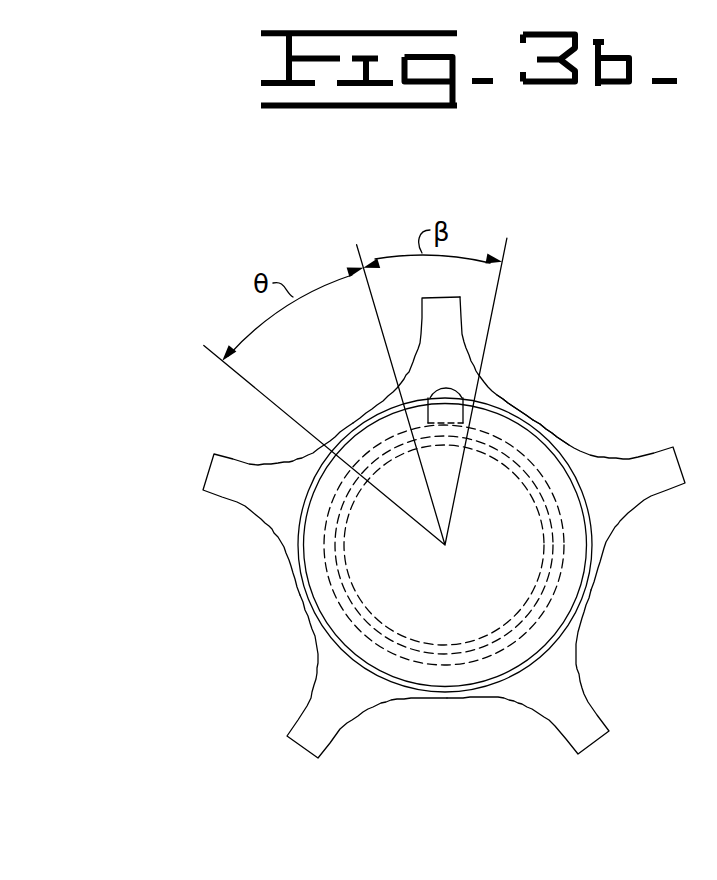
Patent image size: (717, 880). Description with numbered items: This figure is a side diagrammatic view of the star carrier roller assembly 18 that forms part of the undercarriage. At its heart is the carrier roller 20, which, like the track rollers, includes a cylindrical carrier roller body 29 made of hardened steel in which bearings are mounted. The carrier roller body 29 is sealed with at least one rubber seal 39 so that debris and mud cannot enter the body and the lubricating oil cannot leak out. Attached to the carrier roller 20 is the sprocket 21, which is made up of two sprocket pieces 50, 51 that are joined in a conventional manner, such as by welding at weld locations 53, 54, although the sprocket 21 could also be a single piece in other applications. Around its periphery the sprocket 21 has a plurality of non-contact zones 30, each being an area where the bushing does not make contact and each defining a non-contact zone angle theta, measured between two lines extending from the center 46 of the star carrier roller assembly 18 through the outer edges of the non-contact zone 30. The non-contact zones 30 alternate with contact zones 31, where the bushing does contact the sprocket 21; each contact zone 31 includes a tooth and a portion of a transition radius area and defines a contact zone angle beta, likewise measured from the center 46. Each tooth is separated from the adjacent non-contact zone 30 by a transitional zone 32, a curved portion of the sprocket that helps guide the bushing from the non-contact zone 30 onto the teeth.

The star carrier roller assembly 18 is at (448, 489).
The carrier roller 20 is at (448, 527).
The sprocket 21 is at (538, 420).
The carrier roller body 29 is at (587, 583).
The non-contact zone 30 is at (352, 420).
The contact zone 31 is at (467, 328).
The transitional zone 32 is at (403, 380).
The rubber seal 39 is at (436, 378).
The center 46 is at (445, 545).
The sprocket piece 50 is at (630, 457).
The sprocket piece 51 is at (580, 680).
The weld location 53 is at (575, 524).
The weld location 54 is at (312, 554).